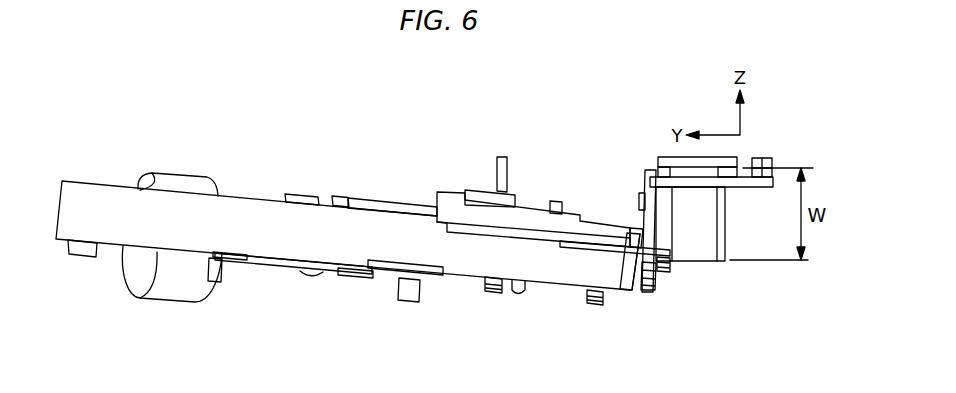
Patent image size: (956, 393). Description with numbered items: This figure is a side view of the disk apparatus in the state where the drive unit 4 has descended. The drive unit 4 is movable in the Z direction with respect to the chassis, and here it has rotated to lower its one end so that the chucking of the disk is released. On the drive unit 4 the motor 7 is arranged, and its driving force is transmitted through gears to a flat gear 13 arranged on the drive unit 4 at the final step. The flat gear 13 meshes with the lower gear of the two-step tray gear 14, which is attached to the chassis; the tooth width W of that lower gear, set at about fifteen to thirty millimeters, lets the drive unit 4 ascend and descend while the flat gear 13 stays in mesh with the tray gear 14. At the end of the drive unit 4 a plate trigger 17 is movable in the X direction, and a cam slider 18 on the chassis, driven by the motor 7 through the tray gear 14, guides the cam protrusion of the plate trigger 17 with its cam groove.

The drive unit 4 is at (90, 182).
The motor 7 is at (174, 179).
The flat gear 13 is at (636, 228).
The tray gear 14 is at (705, 262).
The plate trigger 17 is at (632, 288).
The cam slider 18 is at (668, 270).